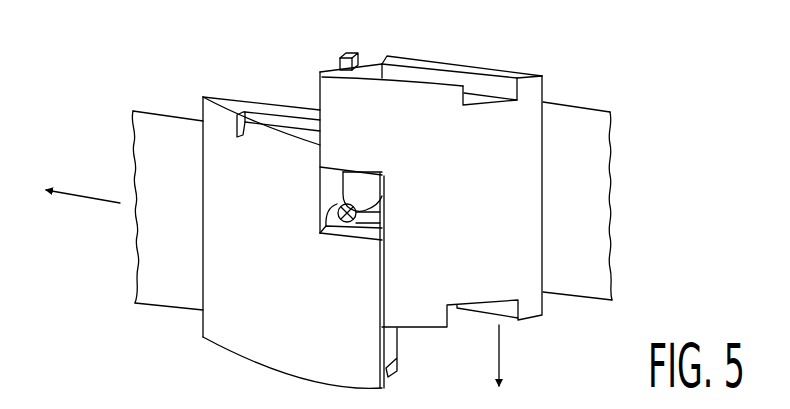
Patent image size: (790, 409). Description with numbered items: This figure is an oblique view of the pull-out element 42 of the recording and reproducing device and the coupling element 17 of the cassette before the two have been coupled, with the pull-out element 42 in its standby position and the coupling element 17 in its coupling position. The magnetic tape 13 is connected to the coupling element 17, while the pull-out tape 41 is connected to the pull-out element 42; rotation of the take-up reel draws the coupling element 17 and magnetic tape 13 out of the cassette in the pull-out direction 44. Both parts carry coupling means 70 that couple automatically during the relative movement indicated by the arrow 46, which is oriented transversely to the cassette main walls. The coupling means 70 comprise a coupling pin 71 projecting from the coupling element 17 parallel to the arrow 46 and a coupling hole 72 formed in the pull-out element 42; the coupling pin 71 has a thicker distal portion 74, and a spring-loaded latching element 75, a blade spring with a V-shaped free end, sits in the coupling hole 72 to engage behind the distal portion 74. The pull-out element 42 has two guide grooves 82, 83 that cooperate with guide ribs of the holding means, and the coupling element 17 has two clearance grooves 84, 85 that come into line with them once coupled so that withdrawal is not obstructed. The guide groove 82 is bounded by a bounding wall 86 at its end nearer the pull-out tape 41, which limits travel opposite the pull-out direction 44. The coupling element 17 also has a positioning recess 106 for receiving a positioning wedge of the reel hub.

The magnetic tape 13 is at (598, 193).
The coupling element 17 is at (425, 193).
The pull-out tape 41 is at (137, 142).
The pull-out element 42 is at (303, 221).
The pull-out direction 44 is at (91, 197).
The direction of movement 46 is at (500, 340).
The coupling means 70 is at (339, 213).
The coupling pin 71 is at (336, 178).
The coupling hole 72 is at (372, 220).
The distal portion 74 is at (370, 190).
The spring-loaded latching element 75 is at (337, 206).
The guide groove 82 is at (272, 117).
The guide groove 83 is at (395, 375).
The clearance groove 84 is at (483, 92).
The clearance groove 85 is at (448, 318).
The bounding wall 86 is at (238, 126).
The positioning recess 106 is at (382, 70).